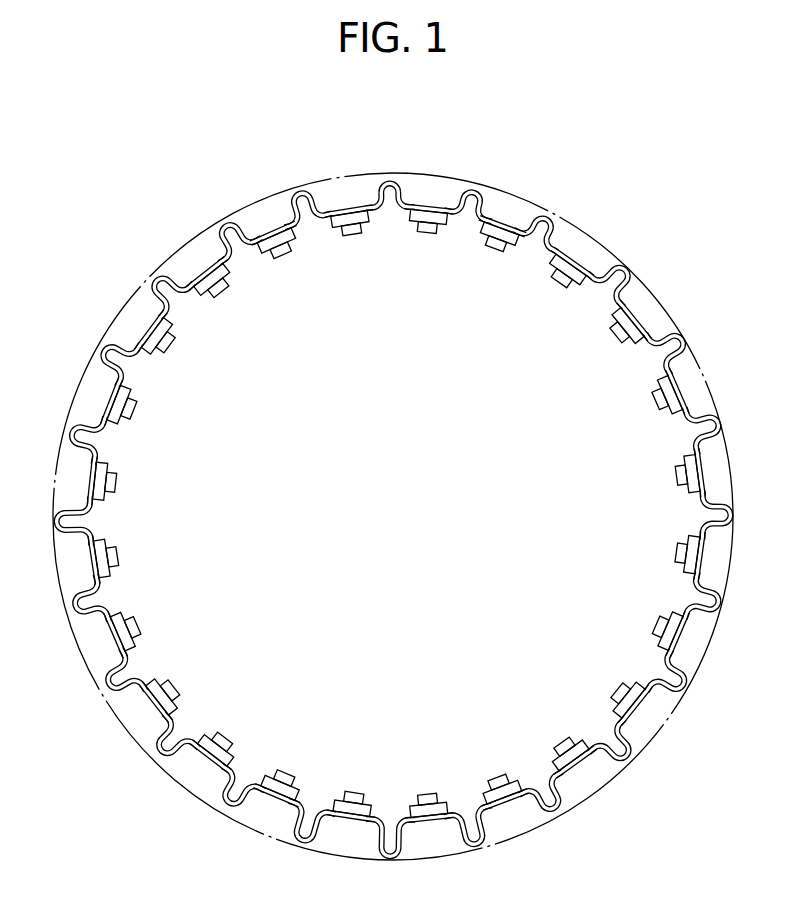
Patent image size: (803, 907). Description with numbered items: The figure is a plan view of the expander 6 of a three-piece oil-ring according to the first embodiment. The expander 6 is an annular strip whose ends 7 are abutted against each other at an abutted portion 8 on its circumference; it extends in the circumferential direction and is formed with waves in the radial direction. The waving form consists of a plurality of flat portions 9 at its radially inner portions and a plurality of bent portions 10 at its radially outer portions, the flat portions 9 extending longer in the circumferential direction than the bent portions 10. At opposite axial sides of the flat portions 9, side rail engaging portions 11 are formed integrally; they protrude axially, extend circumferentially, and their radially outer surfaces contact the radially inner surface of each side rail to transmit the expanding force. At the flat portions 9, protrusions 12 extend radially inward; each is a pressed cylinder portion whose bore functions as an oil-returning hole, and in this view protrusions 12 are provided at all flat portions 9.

The expander 6 is at (488, 213).
The ends 7 is at (412, 194).
The abutted portion 8 is at (388, 181).
The flat portions 9 is at (488, 237).
The bent portions 10 is at (241, 222).
The side rail engaging portions 11 is at (413, 223).
The protrusions 12 is at (342, 237).